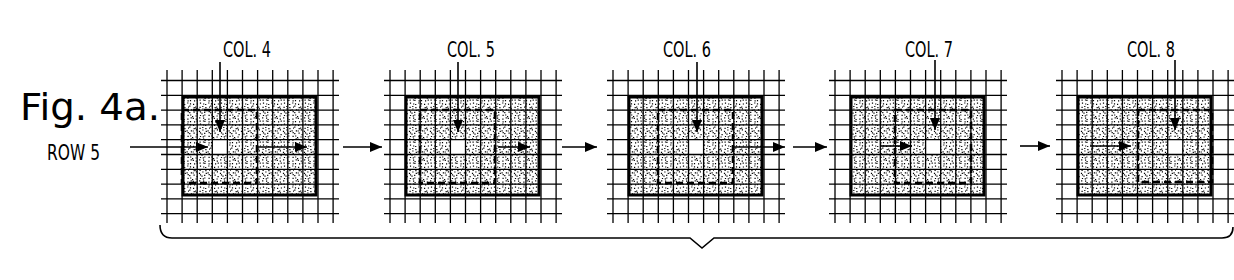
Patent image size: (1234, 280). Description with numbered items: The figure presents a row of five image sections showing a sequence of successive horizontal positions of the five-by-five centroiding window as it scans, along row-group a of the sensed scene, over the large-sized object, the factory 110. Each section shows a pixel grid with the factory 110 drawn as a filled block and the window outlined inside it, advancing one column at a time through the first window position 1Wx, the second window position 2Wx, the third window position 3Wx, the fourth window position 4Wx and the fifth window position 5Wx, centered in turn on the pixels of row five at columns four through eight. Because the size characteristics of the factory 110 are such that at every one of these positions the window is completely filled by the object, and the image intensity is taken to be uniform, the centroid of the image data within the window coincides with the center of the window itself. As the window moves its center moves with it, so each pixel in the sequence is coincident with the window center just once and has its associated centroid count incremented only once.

The factory 110 is at (1187, 225).
The first centroiding window position 1Wx is at (257, 110).
The second centroiding window position 2Wx is at (496, 110).
The third centroiding window position 3Wx is at (733, 110).
The fourth centroiding window position 4Wx is at (971, 110).
The fifth centroiding window position 5Wx is at (1205, 110).